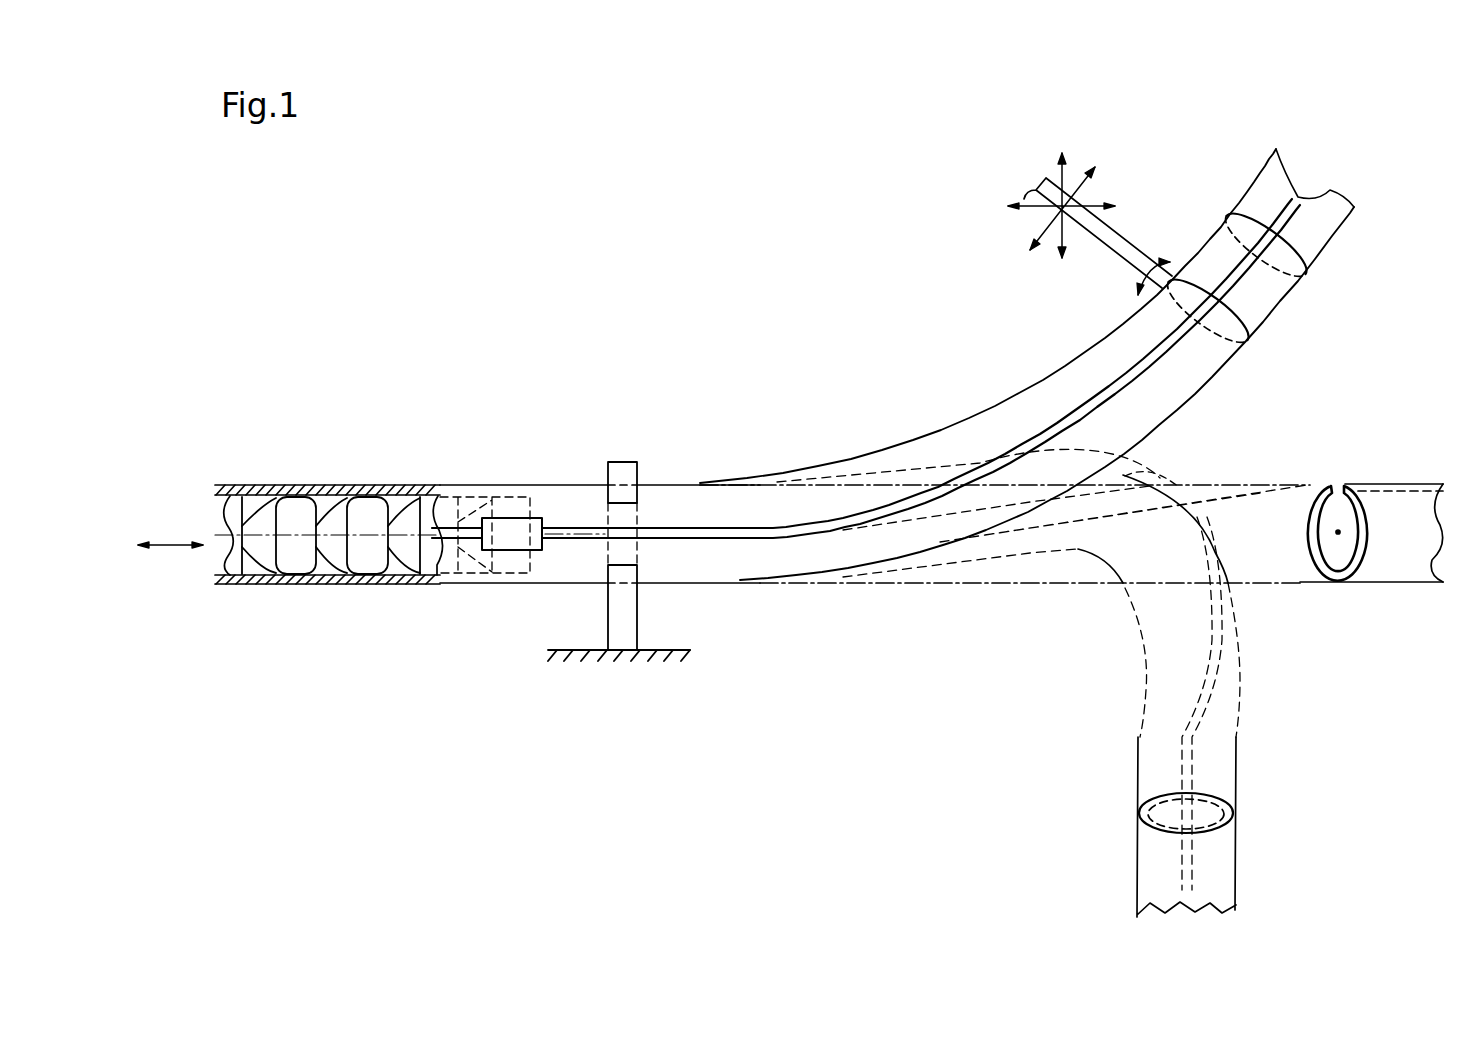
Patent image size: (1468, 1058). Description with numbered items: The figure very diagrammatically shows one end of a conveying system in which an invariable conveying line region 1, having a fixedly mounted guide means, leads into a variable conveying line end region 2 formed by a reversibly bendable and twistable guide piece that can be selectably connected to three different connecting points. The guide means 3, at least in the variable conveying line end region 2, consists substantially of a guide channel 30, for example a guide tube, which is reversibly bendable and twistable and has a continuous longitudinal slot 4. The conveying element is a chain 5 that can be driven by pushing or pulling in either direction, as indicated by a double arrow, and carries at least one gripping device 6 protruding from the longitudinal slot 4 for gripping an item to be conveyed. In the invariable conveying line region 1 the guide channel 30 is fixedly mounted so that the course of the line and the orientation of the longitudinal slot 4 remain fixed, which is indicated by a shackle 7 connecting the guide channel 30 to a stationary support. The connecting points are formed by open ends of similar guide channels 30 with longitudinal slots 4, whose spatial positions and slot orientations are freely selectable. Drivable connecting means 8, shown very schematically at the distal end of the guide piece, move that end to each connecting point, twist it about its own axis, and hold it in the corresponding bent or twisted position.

The invariable conveying line region 1 is at (466, 503).
The variable conveying line end region 2 is at (968, 372).
The guide means 3 is at (412, 588).
The longitudinal slot 4 is at (683, 537).
The chain 5 is at (298, 552).
The gripping device 6 is at (510, 535).
The shackle 7 is at (630, 462).
The connecting means 8 is at (1097, 262).
The guide channel 30 is at (568, 505).